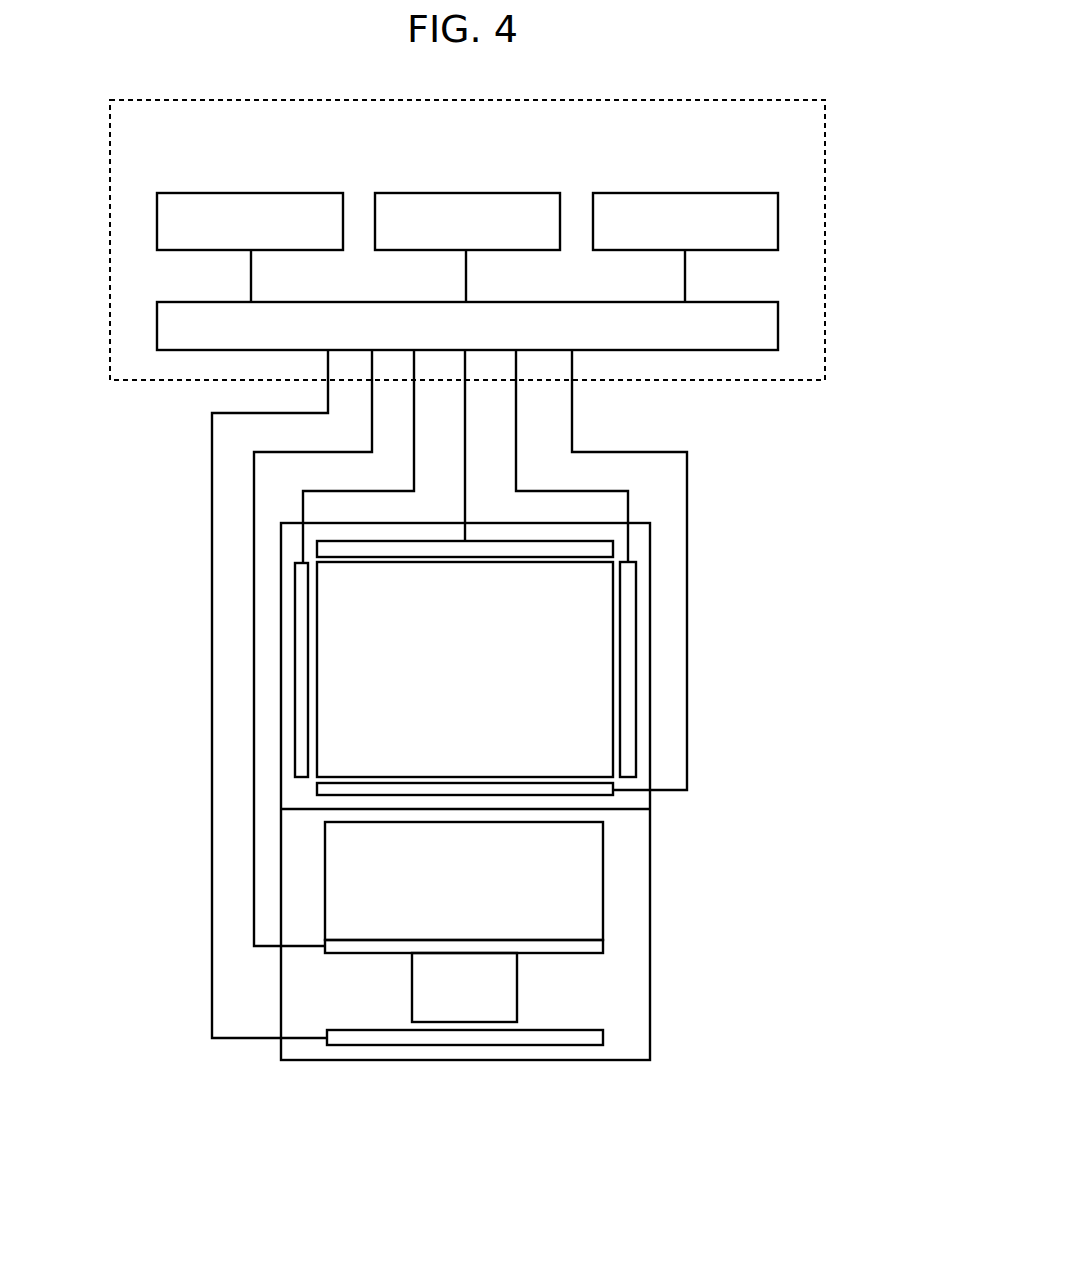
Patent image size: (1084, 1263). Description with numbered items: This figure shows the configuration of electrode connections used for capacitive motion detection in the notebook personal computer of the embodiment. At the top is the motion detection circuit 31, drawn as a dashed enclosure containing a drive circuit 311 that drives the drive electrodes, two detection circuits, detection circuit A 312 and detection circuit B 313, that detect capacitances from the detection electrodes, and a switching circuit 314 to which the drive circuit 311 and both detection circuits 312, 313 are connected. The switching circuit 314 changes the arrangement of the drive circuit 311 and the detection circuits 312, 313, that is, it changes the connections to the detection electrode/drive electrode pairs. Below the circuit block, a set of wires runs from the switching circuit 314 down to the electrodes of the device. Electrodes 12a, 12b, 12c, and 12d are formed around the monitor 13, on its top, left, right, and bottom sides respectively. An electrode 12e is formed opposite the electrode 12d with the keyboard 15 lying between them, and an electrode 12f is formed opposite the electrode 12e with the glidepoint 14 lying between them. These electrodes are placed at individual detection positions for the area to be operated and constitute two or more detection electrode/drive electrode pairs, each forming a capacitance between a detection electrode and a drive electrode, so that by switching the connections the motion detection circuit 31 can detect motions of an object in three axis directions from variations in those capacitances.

The motion detection circuit 31 is at (651, 100).
The drive circuit 311 is at (279, 193).
The detection circuit A 312 is at (519, 193).
The detection circuit B 313 is at (746, 193).
The switching circuit 314 is at (748, 302).
The electrode 12a is at (585, 545).
The electrode 12b is at (303, 647).
The electrode 12c is at (632, 611).
The electrode 12d is at (600, 792).
The electrode 12e is at (572, 947).
The electrode 12f is at (577, 1035).
The monitor 13 is at (592, 680).
The glidepoint 14 is at (462, 1005).
The keyboard 15 is at (585, 918).